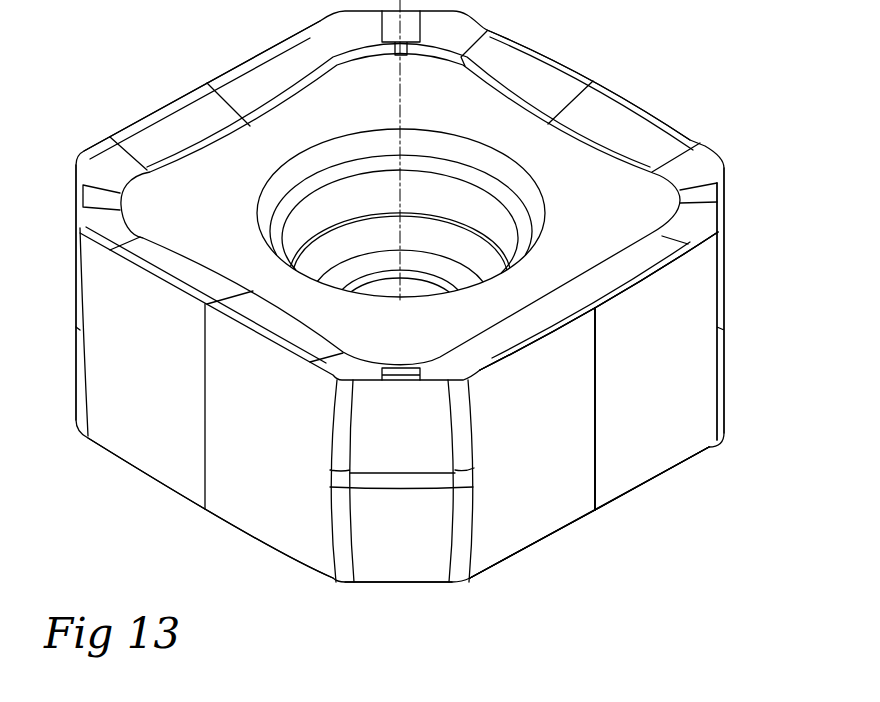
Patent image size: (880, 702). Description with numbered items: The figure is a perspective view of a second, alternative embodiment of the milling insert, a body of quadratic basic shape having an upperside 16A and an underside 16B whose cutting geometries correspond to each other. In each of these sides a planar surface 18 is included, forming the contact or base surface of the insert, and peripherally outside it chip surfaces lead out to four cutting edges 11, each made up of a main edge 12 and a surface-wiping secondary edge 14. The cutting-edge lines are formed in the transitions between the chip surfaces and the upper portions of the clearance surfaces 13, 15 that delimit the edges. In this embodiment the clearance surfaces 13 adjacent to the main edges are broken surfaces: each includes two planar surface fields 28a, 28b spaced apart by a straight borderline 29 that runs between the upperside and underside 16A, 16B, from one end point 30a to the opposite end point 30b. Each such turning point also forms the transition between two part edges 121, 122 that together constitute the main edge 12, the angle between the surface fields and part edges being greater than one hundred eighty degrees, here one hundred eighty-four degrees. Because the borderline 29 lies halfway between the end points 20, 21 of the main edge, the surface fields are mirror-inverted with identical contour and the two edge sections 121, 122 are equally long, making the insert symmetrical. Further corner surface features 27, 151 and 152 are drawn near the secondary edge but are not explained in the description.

The cutting edge 11 is at (713, 134).
The main edge 12 is at (623, 282).
The clearance surface 13 is at (243, 517).
The secondary edge 14 is at (370, 380).
The clearance surface 15 is at (415, 524).
The upperside 16A is at (137, 95).
The underside 16B is at (114, 491).
The planar surface 18 is at (216, 209).
The end point 20 is at (467, 378).
The end point 21 is at (722, 232).
The upper corner face 27 is at (458, 437).
The surface field 28a is at (690, 406).
The surface field 28b is at (555, 474).
The borderline 29 is at (597, 400).
The end point 30a is at (598, 310).
The end point 30b is at (600, 513).
The part edge 121 is at (661, 268).
The part edge 122 is at (530, 340).
The upper corner strip 151 is at (362, 440).
The lower corner strip 152 is at (363, 530).